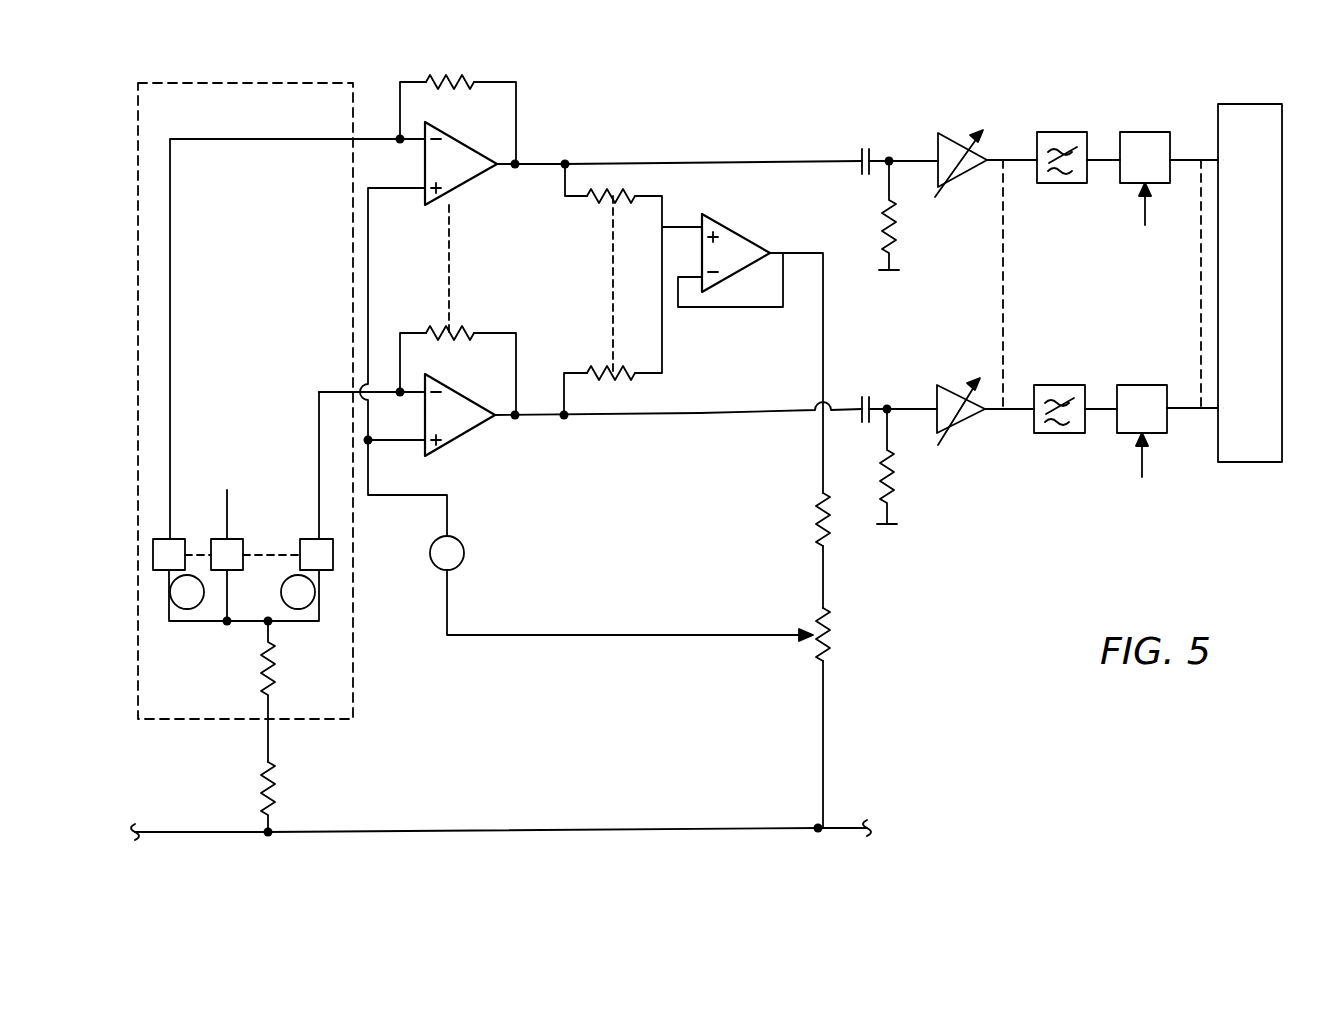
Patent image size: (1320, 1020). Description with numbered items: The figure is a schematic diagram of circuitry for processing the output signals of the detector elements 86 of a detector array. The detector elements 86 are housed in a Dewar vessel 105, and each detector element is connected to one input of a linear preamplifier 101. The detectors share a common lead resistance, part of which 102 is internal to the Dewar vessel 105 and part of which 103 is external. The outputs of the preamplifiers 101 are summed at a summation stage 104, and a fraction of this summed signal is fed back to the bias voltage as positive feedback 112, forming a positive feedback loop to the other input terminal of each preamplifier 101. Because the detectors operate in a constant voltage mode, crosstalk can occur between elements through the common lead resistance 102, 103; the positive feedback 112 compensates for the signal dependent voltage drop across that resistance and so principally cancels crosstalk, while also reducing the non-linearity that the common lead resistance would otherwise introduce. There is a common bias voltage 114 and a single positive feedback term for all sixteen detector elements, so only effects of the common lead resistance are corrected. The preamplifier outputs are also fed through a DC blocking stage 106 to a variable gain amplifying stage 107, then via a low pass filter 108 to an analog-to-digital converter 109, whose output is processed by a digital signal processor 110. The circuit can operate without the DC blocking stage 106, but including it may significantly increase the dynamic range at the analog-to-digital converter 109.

The detector elements 86 is at (183, 539).
The preamplifier 101 is at (462, 142).
The common lead resistance (internal part) 102 is at (272, 675).
The common lead resistance (external part) 103 is at (272, 778).
The summation stage 104 is at (747, 238).
The Dewar vessel 105 is at (290, 83).
The DC blocking stage 106 is at (893, 135).
The variable gain amplifying stage 107 is at (955, 145).
The low pass filter 108 is at (1063, 132).
The analog-to-digital converter 109 is at (1148, 132).
The digital signal processor 110 is at (1240, 462).
The positive feedback 112 is at (633, 635).
The common bias voltage 114 is at (459, 541).